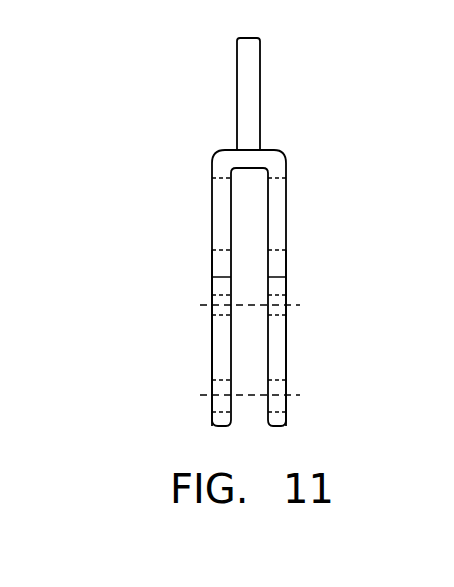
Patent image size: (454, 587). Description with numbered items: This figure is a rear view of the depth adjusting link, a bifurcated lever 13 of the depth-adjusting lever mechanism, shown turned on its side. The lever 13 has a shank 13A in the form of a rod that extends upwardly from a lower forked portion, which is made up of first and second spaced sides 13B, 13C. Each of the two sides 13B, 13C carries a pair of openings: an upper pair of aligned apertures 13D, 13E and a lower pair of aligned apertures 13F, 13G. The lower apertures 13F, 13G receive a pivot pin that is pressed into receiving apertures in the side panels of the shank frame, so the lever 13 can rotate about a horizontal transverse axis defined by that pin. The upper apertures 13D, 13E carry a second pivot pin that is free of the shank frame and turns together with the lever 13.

The bifurcated lever 13 is at (197, 180).
The shank 13A is at (242, 77).
The first side 13B is at (217, 237).
The second side 13C is at (282, 218).
The upper aperture 13D is at (213, 313).
The upper aperture 13E is at (282, 313).
The lower aperture 13F is at (213, 380).
The lower aperture 13G is at (280, 380).